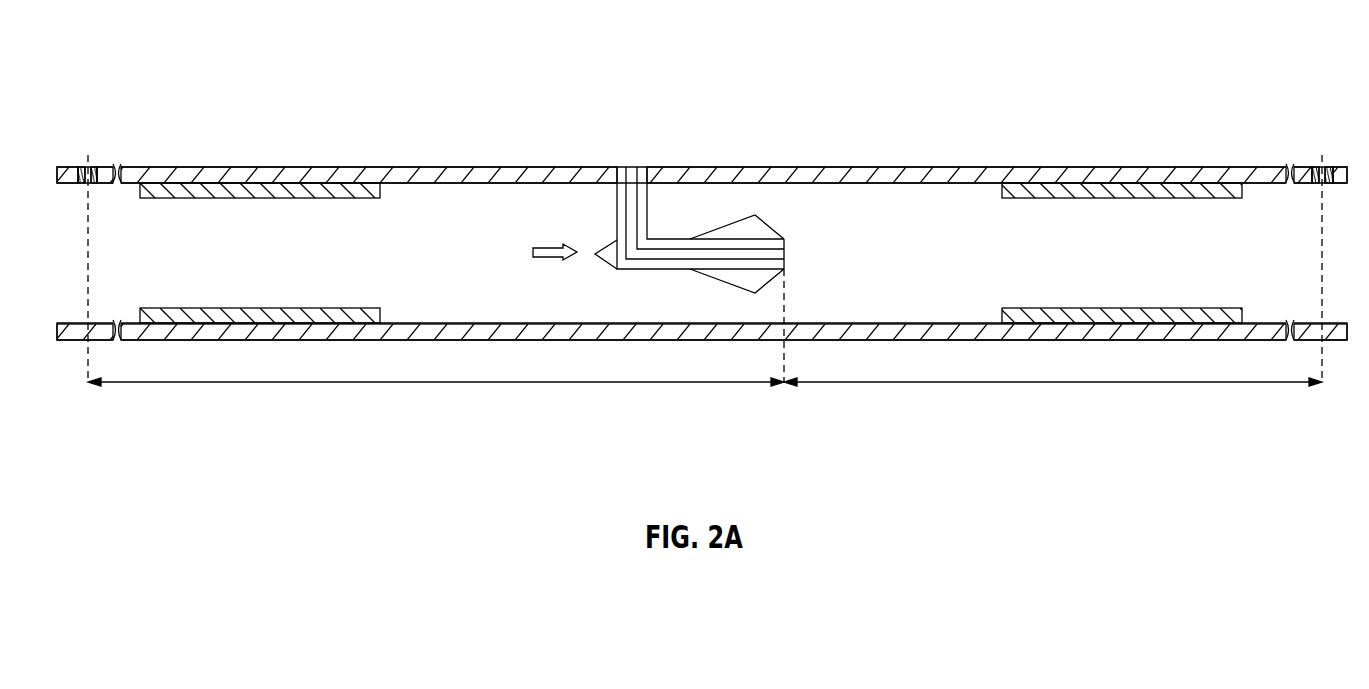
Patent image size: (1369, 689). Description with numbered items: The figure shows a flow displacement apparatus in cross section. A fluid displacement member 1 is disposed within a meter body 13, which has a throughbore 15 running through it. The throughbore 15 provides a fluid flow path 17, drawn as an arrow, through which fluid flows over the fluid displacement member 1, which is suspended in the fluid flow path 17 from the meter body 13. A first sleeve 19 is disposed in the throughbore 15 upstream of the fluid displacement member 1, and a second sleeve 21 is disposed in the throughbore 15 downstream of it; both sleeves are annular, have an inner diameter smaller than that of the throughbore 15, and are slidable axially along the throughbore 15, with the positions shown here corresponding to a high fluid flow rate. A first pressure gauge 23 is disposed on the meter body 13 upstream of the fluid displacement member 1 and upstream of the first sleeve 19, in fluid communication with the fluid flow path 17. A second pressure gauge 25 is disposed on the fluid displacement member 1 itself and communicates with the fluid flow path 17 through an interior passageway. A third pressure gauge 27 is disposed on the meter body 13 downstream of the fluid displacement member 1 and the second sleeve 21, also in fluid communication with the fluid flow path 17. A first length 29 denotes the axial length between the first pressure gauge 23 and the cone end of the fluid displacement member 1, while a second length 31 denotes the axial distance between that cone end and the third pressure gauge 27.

The fluid displacement member 1 is at (718, 279).
The meter body 13 is at (486, 177).
The throughbore 15 is at (920, 298).
The fluid flow path 17 is at (543, 247).
The first sleeve 19 is at (330, 185).
The second sleeve 21 is at (1042, 187).
The first pressure gauge 23 is at (88, 160).
The second pressure gauge 25 is at (632, 162).
The third pressure gauge 27 is at (1318, 160).
The first length 29 is at (430, 383).
The second length 31 is at (1083, 383).